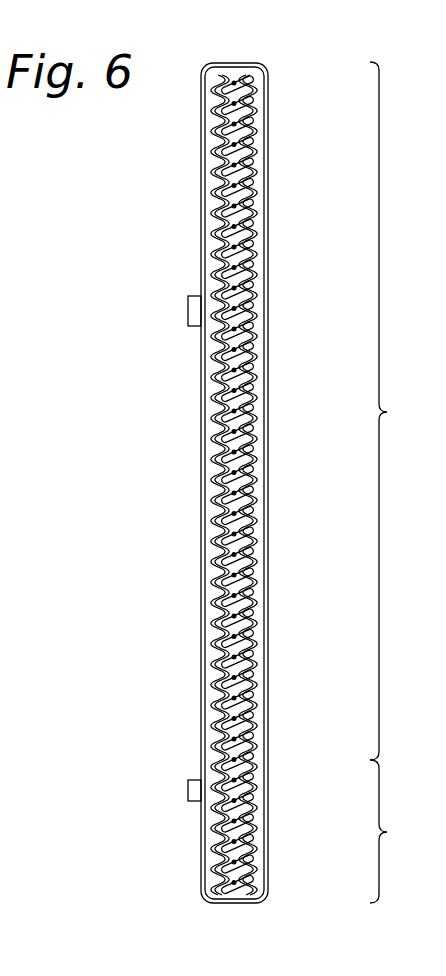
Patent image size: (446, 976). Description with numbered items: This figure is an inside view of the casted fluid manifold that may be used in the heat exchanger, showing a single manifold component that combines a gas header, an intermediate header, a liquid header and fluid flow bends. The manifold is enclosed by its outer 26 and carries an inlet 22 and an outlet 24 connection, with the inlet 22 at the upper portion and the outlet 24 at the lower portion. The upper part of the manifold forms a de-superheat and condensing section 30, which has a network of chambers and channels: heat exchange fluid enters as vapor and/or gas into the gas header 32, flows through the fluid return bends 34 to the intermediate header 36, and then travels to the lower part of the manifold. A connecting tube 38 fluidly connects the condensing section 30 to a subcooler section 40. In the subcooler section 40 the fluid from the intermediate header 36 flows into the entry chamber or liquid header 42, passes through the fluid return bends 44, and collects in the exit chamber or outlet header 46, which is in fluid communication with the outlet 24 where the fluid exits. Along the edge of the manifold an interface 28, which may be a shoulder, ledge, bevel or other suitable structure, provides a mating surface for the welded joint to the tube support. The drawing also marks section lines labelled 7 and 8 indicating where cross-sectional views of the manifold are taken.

The inlet 22 is at (186, 297).
The outlet 24 is at (187, 782).
The outer 26 is at (272, 566).
The interface 28 is at (208, 645).
The de-superheat and condensing section 30 is at (394, 411).
The gas header 32 is at (262, 152).
The fluid return bends 34 is at (218, 147).
The intermediate header 36 is at (215, 203).
The connecting tube 38 is at (212, 755).
The subcooler section 40 is at (396, 831).
The liquid header 42 is at (262, 840).
The fluid return bends 44 is at (220, 858).
The outlet header 46 is at (215, 825).
The section line 7- 7 is at (332, 367).
The section line 8- 8 is at (180, 930).